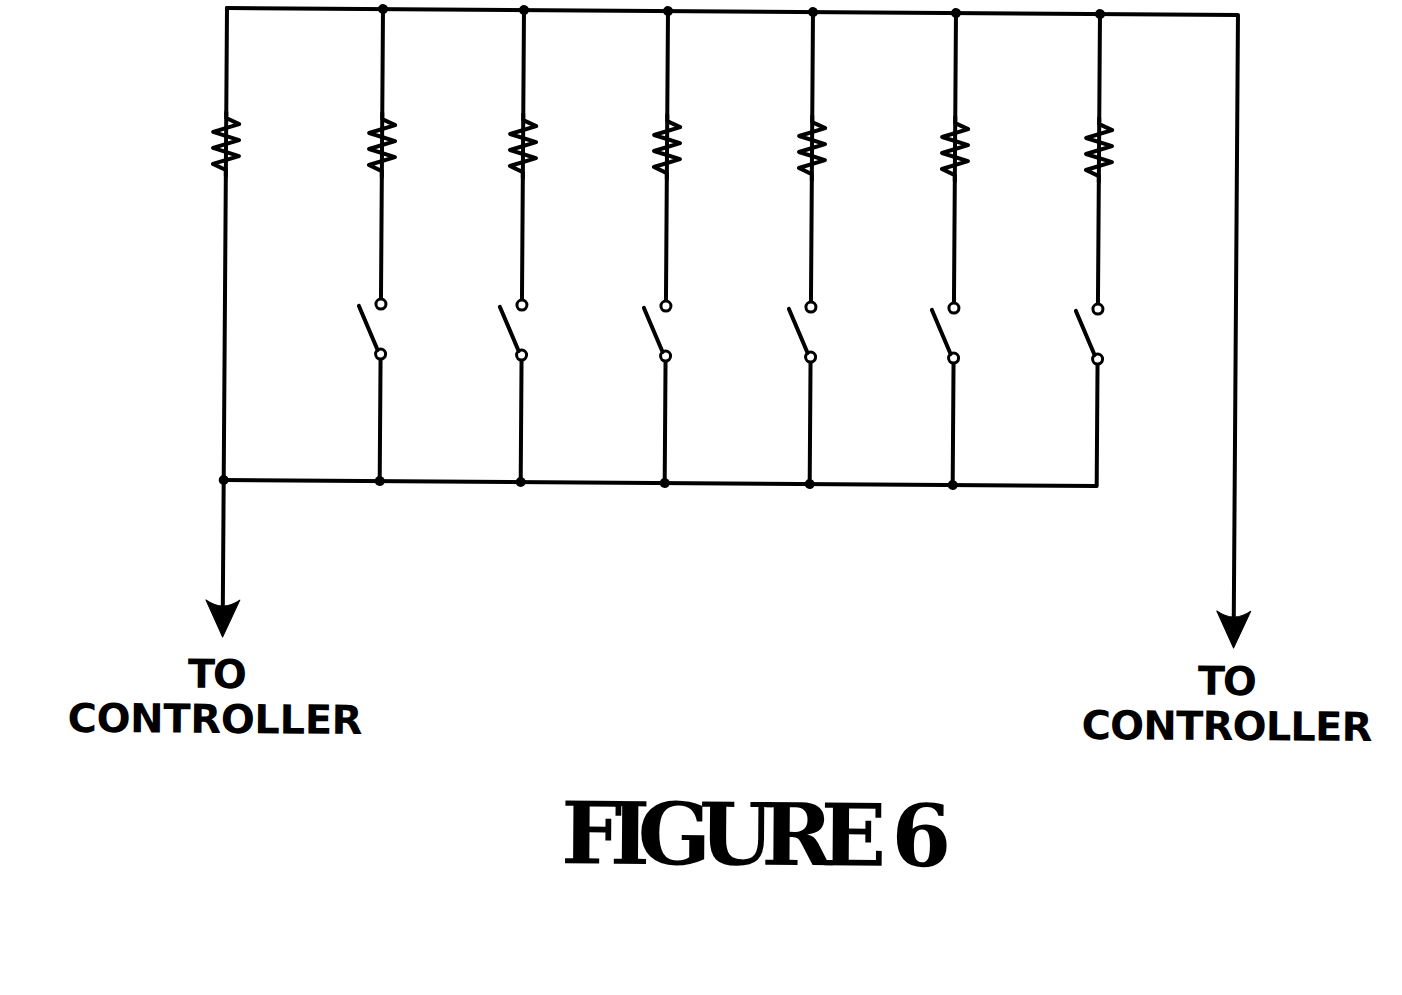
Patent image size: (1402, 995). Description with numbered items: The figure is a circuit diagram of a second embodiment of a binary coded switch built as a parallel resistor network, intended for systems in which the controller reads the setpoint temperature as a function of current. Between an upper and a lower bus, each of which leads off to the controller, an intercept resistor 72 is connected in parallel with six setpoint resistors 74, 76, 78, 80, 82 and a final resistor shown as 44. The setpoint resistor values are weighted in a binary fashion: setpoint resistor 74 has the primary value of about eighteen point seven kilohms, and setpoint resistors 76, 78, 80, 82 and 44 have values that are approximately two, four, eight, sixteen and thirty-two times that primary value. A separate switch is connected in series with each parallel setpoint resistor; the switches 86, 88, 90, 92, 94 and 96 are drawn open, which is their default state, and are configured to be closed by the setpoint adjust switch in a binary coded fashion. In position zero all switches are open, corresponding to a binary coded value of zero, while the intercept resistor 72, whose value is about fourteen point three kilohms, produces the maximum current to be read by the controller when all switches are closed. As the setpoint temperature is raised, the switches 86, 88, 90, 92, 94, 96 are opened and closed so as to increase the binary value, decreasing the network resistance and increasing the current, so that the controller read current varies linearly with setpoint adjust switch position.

The intercept resistor 72 is at (215, 149).
The setpoint resistor 74 is at (371, 149).
The setpoint resistor 76 is at (512, 149).
The setpoint resistor 78 is at (656, 149).
The setpoint resistor 80 is at (801, 149).
The setpoint resistor 82 is at (944, 149).
The resistor 44 is at (1088, 149).
The switch 86 is at (369, 337).
The switch 88 is at (510, 337).
The switch 90 is at (654, 337).
The switch 92 is at (799, 337).
The switch 94 is at (942, 337).
The switch 96 is at (1086, 337).